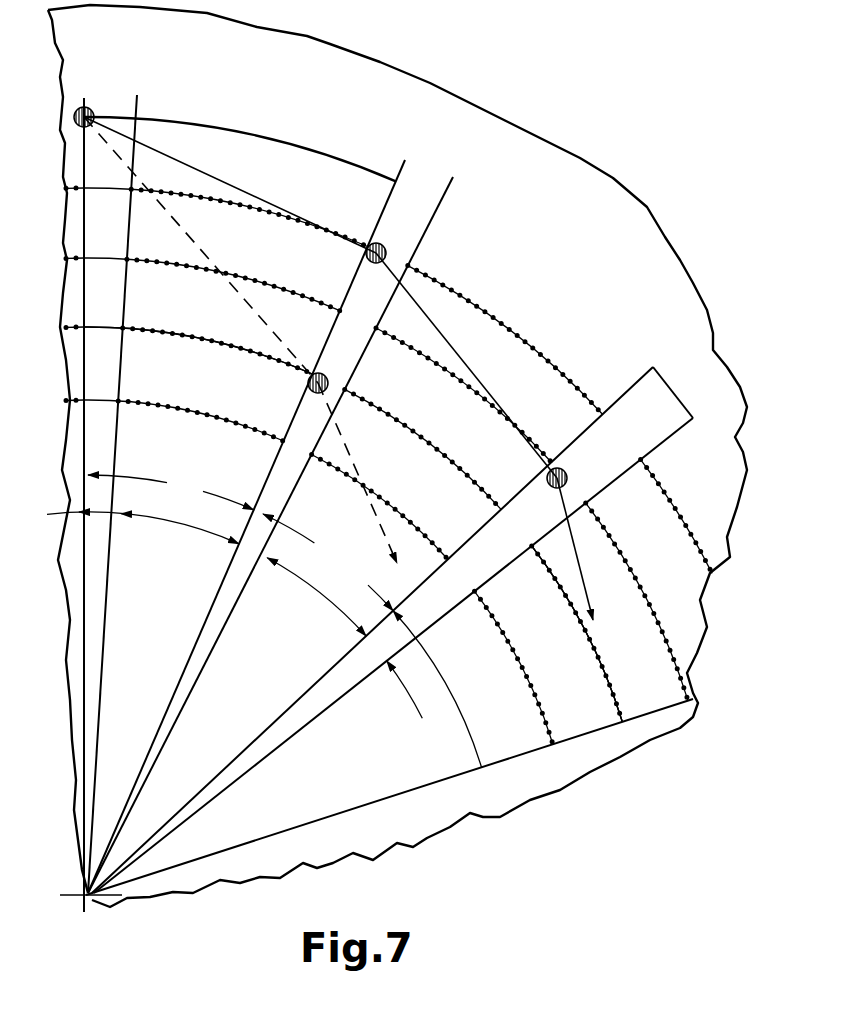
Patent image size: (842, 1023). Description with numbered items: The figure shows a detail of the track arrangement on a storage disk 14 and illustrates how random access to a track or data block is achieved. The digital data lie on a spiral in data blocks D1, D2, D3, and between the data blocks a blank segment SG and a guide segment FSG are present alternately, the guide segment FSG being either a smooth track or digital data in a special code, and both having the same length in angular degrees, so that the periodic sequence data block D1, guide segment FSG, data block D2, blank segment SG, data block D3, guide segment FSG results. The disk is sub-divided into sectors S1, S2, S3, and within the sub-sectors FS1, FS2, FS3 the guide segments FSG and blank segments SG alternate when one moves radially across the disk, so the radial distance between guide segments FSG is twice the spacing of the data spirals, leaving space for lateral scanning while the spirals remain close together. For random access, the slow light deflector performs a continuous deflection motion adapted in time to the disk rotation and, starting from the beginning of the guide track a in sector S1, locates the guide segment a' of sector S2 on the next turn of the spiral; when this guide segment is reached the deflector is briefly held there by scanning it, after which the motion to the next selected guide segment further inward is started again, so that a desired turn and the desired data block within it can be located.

The scanning surface / record carrier 14 is at (240, 126).
The beginning of the guide track a is at (84, 99).
The guide segment of sector S2 a' is at (320, 297).
The guide segment FSG is at (107, 403).
The blank segment SG is at (109, 330).
The data block D1 is at (196, 340).
The data block D2 is at (440, 456).
The data block D3 is at (597, 668).
The sector S1 is at (171, 492).
The sub-sector FS1 is at (98, 516).
The sector S2 is at (328, 562).
The sub-sector FS2 is at (252, 545).
The sector S3 is at (437, 689).
The sub-sector FS3 is at (376, 648).